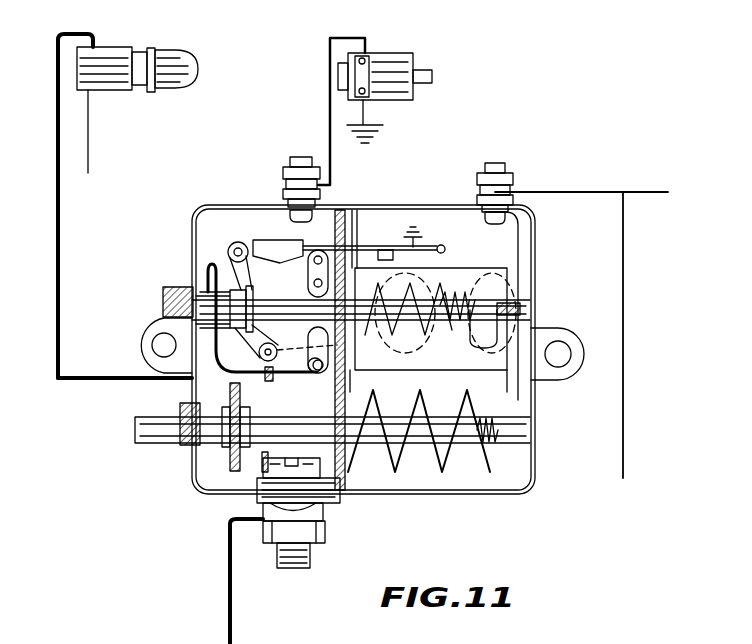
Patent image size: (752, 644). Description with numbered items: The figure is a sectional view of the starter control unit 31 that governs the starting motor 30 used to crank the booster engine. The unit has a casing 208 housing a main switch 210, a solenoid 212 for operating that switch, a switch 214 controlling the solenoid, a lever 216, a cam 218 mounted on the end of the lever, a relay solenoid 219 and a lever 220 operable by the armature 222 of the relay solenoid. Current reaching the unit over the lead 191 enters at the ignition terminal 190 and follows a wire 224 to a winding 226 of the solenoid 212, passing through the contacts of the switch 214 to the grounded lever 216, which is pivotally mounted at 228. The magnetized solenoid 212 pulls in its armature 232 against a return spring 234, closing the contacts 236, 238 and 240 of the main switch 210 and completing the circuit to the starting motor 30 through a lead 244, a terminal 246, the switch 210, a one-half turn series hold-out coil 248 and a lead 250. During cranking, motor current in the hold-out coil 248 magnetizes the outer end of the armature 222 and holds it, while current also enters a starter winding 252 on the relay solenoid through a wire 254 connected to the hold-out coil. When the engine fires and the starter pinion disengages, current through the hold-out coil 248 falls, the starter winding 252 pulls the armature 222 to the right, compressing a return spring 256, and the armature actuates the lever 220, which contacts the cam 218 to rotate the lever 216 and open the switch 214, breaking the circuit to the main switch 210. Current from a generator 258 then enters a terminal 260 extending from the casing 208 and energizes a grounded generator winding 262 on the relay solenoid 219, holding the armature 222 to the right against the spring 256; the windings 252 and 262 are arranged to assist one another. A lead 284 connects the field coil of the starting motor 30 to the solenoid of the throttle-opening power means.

The starting motor 30 is at (113, 57).
The generator 258 is at (390, 64).
The lead 284 is at (92, 148).
The casing 208 is at (207, 205).
The terminal 260 is at (296, 173).
The cam 218 is at (263, 243).
The lever 216 is at (388, 247).
The switch 214 is at (390, 250).
The pivot 228 is at (447, 242).
The ignition terminal 190 is at (502, 166).
The lead 191 is at (625, 365).
The lever 220 is at (240, 265).
The hold-out coil 248 is at (208, 272).
The armature 222 is at (280, 305).
The contact 236 is at (273, 392).
The wire 224 is at (520, 242).
The relay solenoid 219 is at (410, 290).
The wire 254 is at (378, 388).
The generator winding 262 is at (408, 318).
The return spring 256 is at (380, 294).
The starter winding 252 is at (487, 318).
The main switch 210 is at (225, 450).
The contact 238 is at (262, 453).
The contact 240 is at (262, 457).
The starter control unit 31 is at (185, 462).
The terminal 246 is at (290, 542).
The lead 244 is at (225, 597).
The armature 232 is at (370, 462).
The winding 226 is at (398, 468).
The solenoid 212 is at (445, 470).
The return spring 234 is at (487, 420).
The lead 250 is at (103, 380).